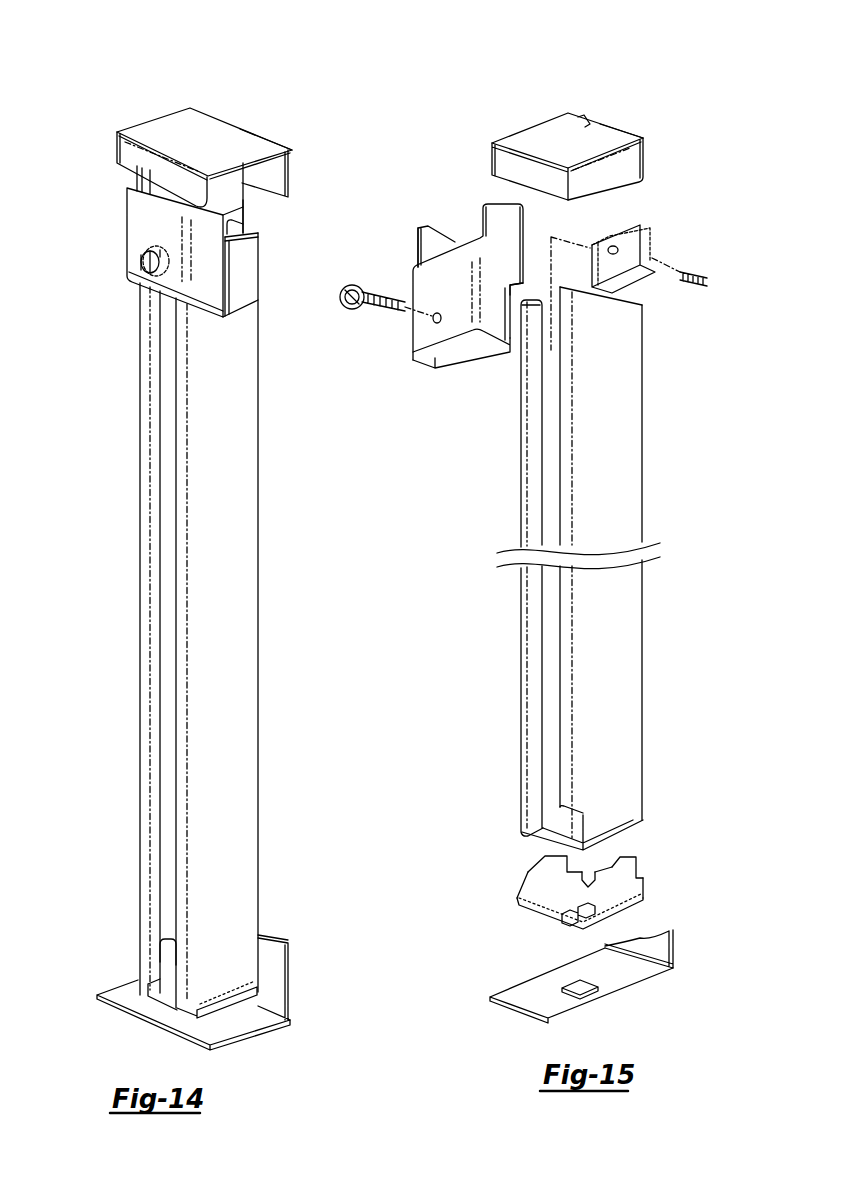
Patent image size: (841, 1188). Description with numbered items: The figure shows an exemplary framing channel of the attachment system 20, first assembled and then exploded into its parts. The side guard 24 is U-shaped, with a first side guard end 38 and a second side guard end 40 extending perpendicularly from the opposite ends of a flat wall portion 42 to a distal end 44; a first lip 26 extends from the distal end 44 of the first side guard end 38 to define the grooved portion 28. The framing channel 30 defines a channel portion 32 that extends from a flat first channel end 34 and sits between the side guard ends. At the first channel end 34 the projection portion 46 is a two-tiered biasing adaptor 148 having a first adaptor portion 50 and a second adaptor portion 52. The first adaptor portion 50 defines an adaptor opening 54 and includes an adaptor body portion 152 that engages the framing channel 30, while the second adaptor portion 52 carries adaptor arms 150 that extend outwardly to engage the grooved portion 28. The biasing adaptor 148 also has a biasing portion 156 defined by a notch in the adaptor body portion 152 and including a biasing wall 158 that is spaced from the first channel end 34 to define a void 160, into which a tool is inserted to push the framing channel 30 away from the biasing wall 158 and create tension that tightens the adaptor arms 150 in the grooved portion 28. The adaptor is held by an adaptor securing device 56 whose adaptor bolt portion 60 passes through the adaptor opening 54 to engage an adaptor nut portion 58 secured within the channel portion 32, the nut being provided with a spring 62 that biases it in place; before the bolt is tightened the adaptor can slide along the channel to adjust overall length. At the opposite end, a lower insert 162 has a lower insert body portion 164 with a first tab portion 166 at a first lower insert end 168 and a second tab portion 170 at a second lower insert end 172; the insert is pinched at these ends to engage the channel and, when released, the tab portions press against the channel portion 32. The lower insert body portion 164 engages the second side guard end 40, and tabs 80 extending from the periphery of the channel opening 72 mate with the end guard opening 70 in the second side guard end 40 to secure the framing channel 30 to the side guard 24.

In FIG. 14, the attachment system 20 is at (118, 367).
In FIG. 15, the attachment system 20 is at (438, 434).
In FIG. 14, the side guard 24 is at (291, 150).
In FIG. 15, the side guard 24 is at (647, 138).
In FIG. 14, the first lip 26 is at (123, 150).
In FIG. 15, the first lip 26 is at (502, 158).
In FIG. 14, the grooved portion 28 is at (222, 160).
In FIG. 15, the grooved portion 28 is at (581, 128).
In FIG. 14, the framing channel 30 is at (250, 447).
In FIG. 15, the framing channel 30 is at (622, 512).
In FIG. 14, the channel portion 32 is at (165, 455).
In FIG. 15, the channel portion 32 is at (552, 508).
In FIG. 14, the first channel end 34 is at (252, 232).
In FIG. 15, the first channel end 34 is at (635, 302).
In FIG. 14, the first side guard end 38 is at (255, 152).
In FIG. 15, the first side guard end 38 is at (617, 130).
In FIG. 14, the second side guard end 40 is at (178, 1035).
In FIG. 15, the second side guard end 40 is at (627, 980).
In FIG. 14, the flat wall portion 42 is at (272, 172).
In FIG. 15, the flat wall portion 42 is at (632, 163).
In FIG. 14, the distal end 44 is at (193, 160).
In FIG. 15, the distal end 44 is at (587, 132).
In FIG. 14, the projection portion 46 is at (127, 246).
In FIG. 15, the projection portion 46 is at (425, 372).
In FIG. 14, the first adaptor portion 50 is at (138, 207).
In FIG. 15, the first adaptor portion 50 is at (427, 343).
In FIG. 14, the second adaptor portion 52 is at (137, 178).
In FIG. 15, the second adaptor portion 52 is at (417, 242).
In FIG. 15, the adaptor opening 54 is at (427, 325).
In FIG. 14, the adaptor securing device 56 is at (136, 236).
In FIG. 15, the adaptor securing device 56 is at (358, 268).
In FIG. 15, the adaptor nut portion 58 is at (640, 245).
In FIG. 14, the adaptor bolt portion 60 is at (146, 266).
In FIG. 15, the adaptor bolt portion 60 is at (347, 290).
In FIG. 15, the spring 62 is at (700, 284).
In FIG. 15, the end guard opening 70 is at (583, 990).
In FIG. 15, the channel opening 72 is at (520, 912).
In FIG. 15, the tab 80 is at (608, 917).
In FIG. 14, the biasing adaptor 148 is at (140, 284).
In FIG. 15, the biasing adaptor 148 is at (465, 350).
In FIG. 14, the adaptor arm 150 is at (152, 178).
In FIG. 15, the adaptor arm 150 is at (427, 233).
In FIG. 14, the adaptor body portion 152 is at (218, 295).
In FIG. 15, the adaptor body portion 152 is at (500, 333).
In FIG. 14, the biasing portion 156 is at (228, 276).
In FIG. 15, the biasing portion 156 is at (533, 322).
In FIG. 14, the biasing wall 158 is at (240, 225).
In FIG. 15, the biasing wall 158 is at (508, 233).
In FIG. 14, the void 160 is at (242, 240).
In FIG. 14, the lower insert 162 is at (224, 1034).
In FIG. 15, the lower insert 162 is at (655, 889).
In FIG. 14, the lower insert body portion 164 is at (230, 1015).
In FIG. 15, the lower insert body portion 164 is at (543, 915).
In FIG. 15, the first tab portion 166 is at (627, 880).
In FIG. 15, the first lower insert end 168 is at (620, 850).
In FIG. 14, the second tab portion 170 is at (162, 978).
In FIG. 15, the second tab portion 170 is at (538, 877).
In FIG. 14, the second lower insert end 172 is at (168, 946).
In FIG. 15, the second lower insert end 172 is at (547, 860).